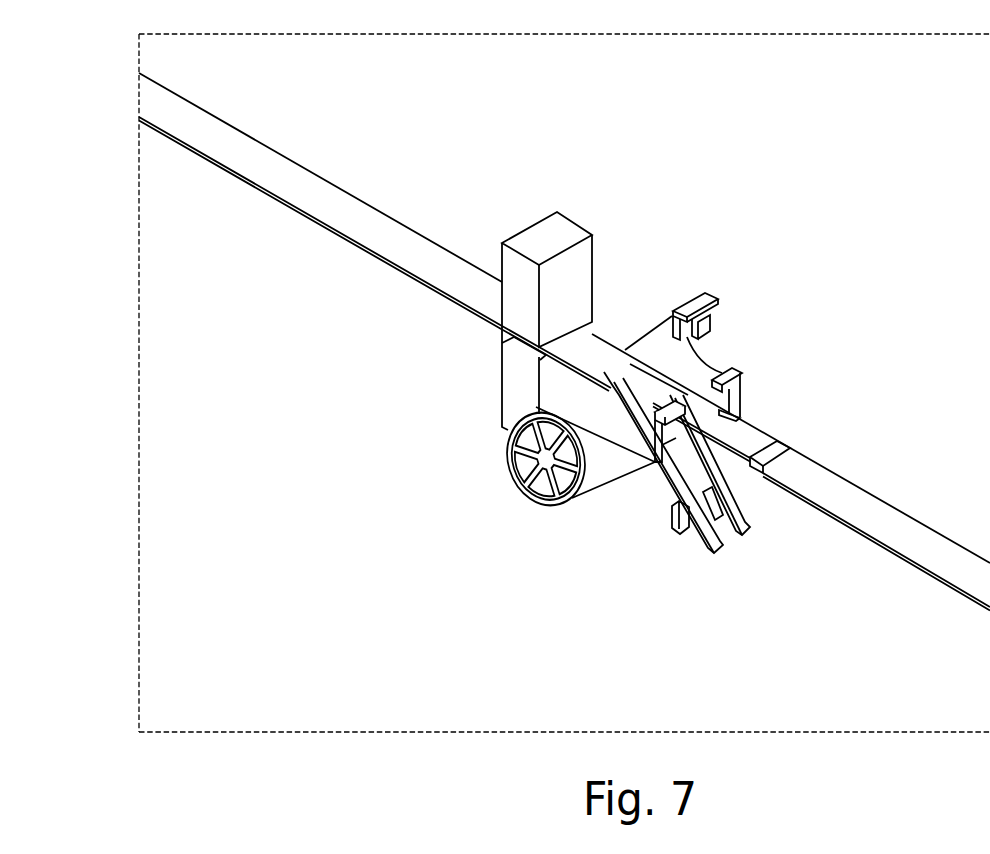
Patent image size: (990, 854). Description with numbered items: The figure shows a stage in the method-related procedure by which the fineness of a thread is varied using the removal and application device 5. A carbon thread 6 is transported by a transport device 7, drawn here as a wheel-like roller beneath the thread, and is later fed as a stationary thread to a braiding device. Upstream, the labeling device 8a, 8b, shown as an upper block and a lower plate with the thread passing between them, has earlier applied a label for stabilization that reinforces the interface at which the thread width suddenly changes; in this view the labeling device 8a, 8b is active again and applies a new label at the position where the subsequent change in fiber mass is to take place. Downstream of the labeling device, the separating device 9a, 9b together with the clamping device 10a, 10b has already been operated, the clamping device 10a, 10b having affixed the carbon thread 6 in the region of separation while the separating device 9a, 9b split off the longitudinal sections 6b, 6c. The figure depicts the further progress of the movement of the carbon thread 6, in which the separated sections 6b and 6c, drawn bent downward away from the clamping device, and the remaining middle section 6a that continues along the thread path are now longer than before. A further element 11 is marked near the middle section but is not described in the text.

The removal and application device 5 is at (430, 481).
The carbon thread 6 is at (385, 216).
The remaining middle section 6a is at (755, 441).
The split-off longitudinal section 6b is at (683, 481).
The split-off longitudinal section 6c is at (727, 480).
The transport device 7 is at (567, 530).
The labeling device 8a is at (503, 345).
The labeling device 8b is at (595, 247).
The separating device 9a is at (720, 306).
The separating device 9b is at (717, 482).
The clamping device 10a is at (654, 463).
The clamping device 10b is at (744, 393).
The connector plate 11 is at (792, 450).